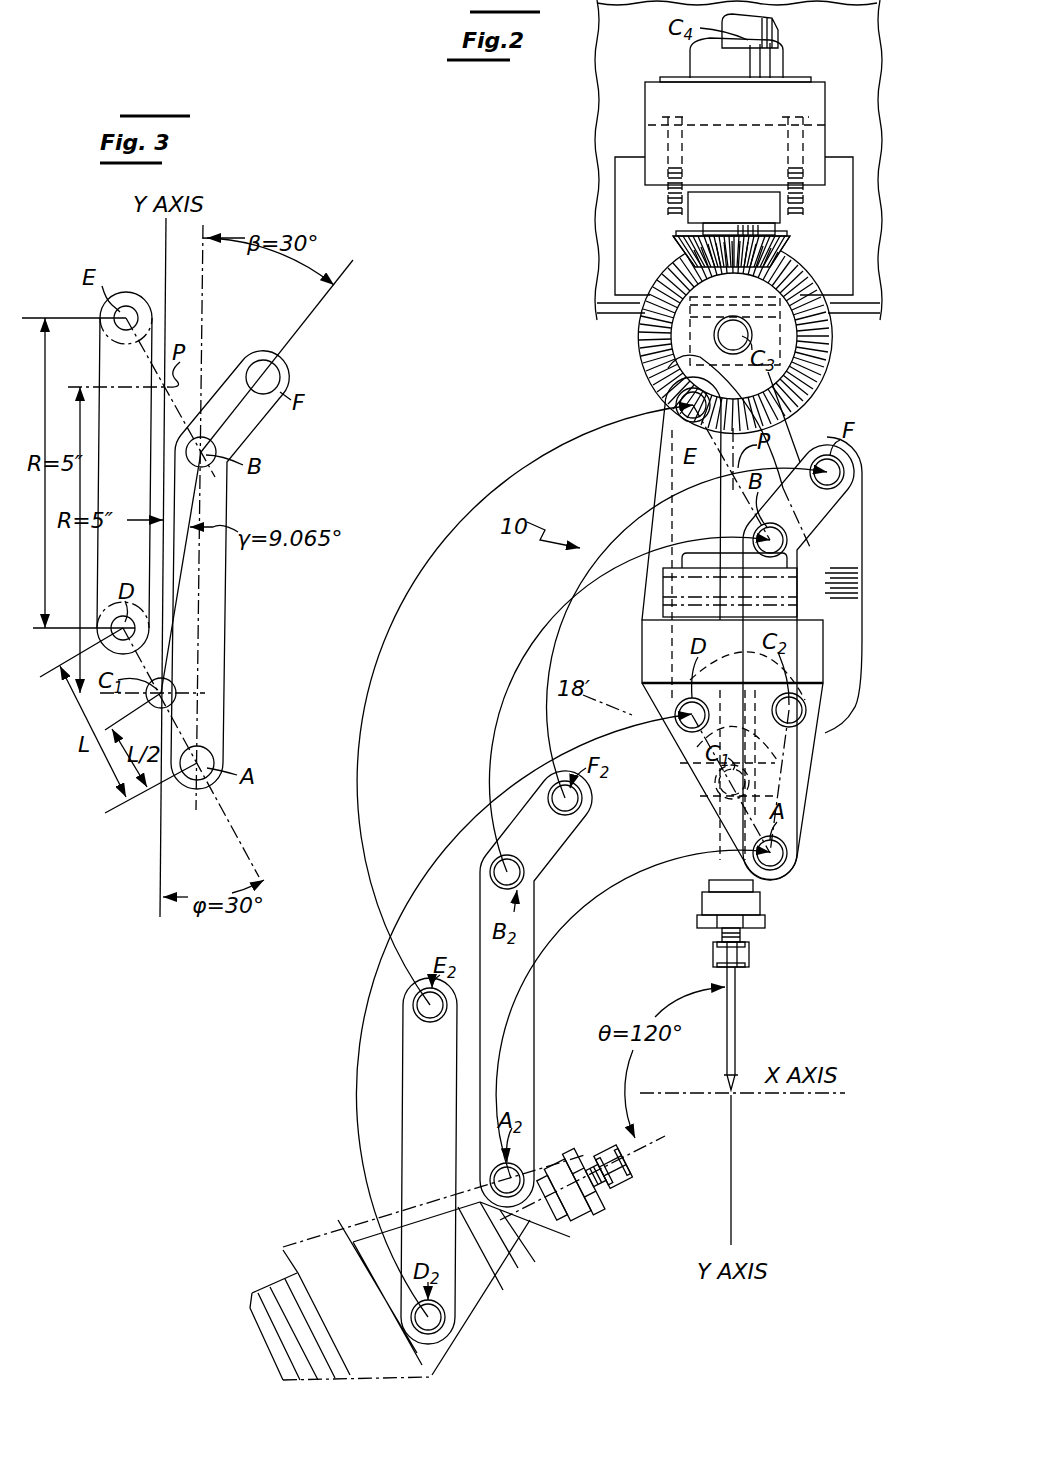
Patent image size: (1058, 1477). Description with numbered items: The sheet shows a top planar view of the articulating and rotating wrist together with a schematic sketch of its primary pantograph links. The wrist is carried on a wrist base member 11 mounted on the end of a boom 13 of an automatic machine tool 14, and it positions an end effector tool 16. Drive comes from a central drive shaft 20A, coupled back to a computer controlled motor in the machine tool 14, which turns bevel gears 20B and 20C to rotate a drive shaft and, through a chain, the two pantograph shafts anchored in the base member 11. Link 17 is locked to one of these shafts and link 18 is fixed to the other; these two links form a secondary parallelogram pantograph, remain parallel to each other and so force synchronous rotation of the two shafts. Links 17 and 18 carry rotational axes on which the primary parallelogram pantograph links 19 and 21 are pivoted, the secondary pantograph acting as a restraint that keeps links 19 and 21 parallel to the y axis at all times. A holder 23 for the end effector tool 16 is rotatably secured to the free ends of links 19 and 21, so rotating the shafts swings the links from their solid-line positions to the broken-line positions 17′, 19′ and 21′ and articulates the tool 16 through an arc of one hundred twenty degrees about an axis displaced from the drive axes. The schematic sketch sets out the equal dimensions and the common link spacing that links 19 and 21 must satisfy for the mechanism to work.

In FIG. 2, the wrist base member 11 is at (738, 205).
In FIG. 2, the boom 13 is at (643, 152).
In FIG. 2, the automatic machine tool 14 is at (615, 205).
In FIG. 2, the end effector tool 16 is at (762, 903).
In FIG. 2, the secondary pantograph link 17 is at (667, 452).
In FIG. 2, the secondary pantograph link 18 is at (848, 603).
In FIG. 3, the primary pantograph link 19 is at (217, 600).
In FIG. 2, the primary pantograph link 19 is at (830, 502).
In FIG. 2, the central drive shaft 20A is at (765, 42).
In FIG. 2, the bevel gear 20B is at (680, 240).
In FIG. 2, the bevel gear 20C is at (796, 264).
In FIG. 3, the primary pantograph link 21 is at (112, 375).
In FIG. 2, the holder 23 is at (805, 790).
In FIG. 2, the secondary pantograph link in articulated position 17′ is at (605, 912).
In FIG. 2, the primary pantograph link in articulated position 19′ is at (532, 1003).
In FIG. 2, the primary pantograph link in articulated position 21′ is at (410, 1132).